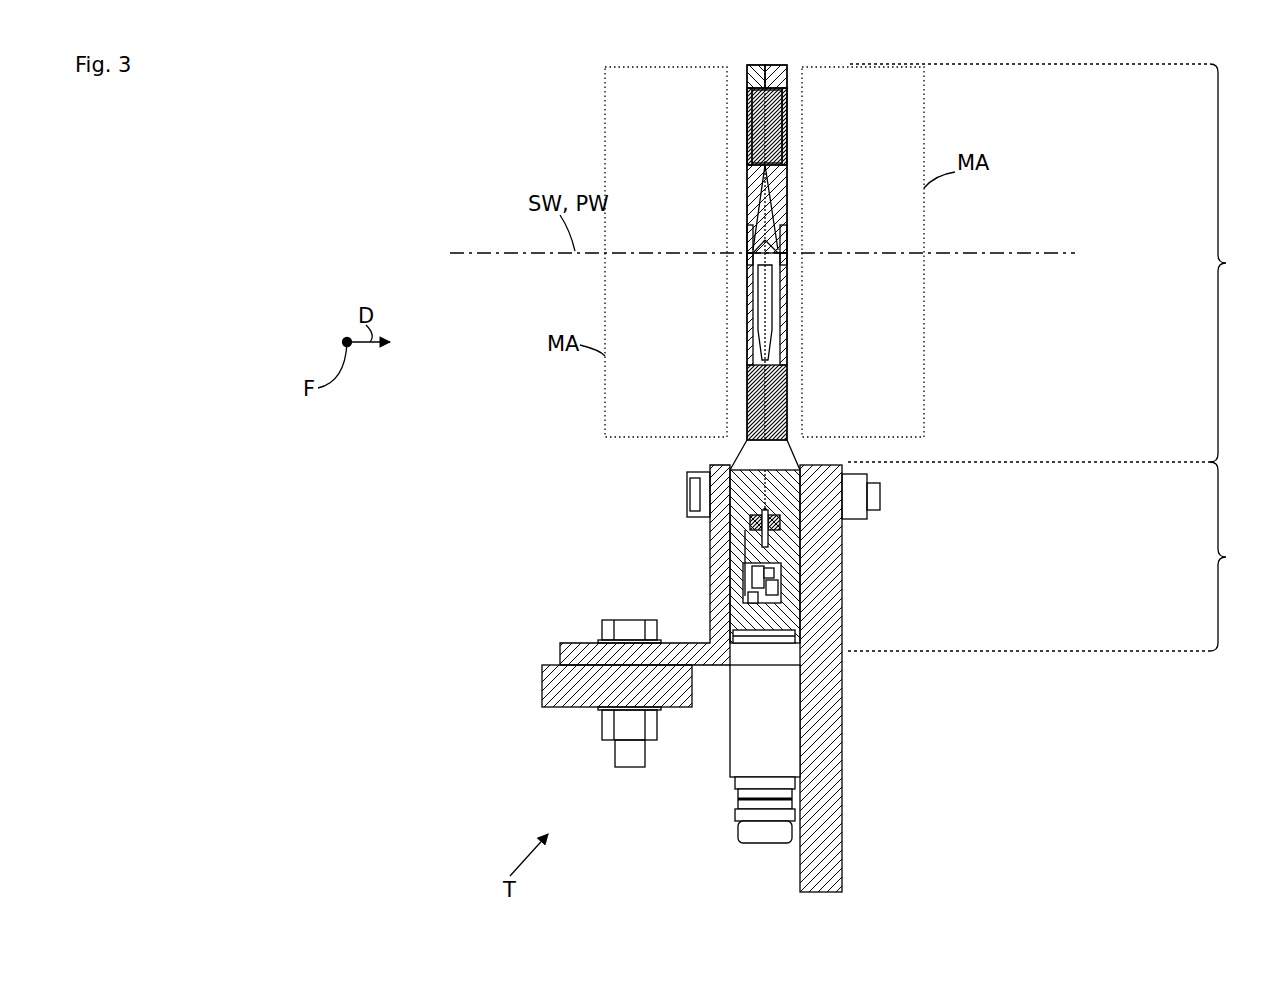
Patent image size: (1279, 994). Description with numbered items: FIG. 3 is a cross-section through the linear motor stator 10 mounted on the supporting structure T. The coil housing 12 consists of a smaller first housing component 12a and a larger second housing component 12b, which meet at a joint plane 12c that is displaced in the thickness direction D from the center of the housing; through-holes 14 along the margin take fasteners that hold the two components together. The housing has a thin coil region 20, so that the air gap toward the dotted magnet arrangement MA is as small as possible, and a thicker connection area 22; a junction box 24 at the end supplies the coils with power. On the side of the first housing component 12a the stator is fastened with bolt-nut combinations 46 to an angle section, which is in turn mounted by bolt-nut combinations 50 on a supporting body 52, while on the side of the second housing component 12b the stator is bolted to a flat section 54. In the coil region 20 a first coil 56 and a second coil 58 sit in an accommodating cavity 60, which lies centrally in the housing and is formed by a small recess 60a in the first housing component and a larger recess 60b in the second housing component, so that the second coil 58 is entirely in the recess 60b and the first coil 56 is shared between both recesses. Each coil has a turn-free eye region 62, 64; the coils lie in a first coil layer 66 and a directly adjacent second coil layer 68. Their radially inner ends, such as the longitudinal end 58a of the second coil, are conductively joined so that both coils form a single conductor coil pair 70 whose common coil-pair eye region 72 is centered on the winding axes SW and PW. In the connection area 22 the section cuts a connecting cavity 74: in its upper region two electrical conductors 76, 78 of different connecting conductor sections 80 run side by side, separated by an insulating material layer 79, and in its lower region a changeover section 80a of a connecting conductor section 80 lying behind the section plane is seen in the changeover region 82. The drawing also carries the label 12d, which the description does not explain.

The linear motor stator 10 is at (464, 130).
The coil housing 12 is at (627, 138).
The first housing component 12a is at (760, 72).
The second housing component 12b is at (780, 72).
The joint plane 12c is at (757, 205).
The second inner wall portion 12d is at (748, 218).
The through-holes 14 is at (785, 645).
The coil region 20 is at (1056, 263).
The connection area 22 is at (1054, 556).
The junction box 24 is at (765, 730).
The bolt-nut combinations 46 is at (690, 497).
The bolt-nut combinations 50 is at (628, 728).
The supporting body 52 is at (548, 690).
The flat section 54 is at (830, 820).
The first coil 56 is at (744, 143).
The second coil 58 is at (790, 143).
The radially inner longitudinal end 58a is at (773, 338).
The accommodating cavity 60 is at (744, 350).
The recess 60a is at (752, 262).
The recess 60b is at (773, 262).
The eye region 62 is at (744, 233).
The eye region 64 is at (790, 233).
The first coil layer 66 is at (757, 243).
The second coil layer 68 is at (775, 243).
The single conductor coil pair 70 is at (790, 122).
The coil-pair eye region 72 is at (790, 207).
The connecting cavity 74 is at (738, 536).
The electrical conductor 76 is at (744, 540).
The electrical conductor 78 is at (782, 520).
The electrically insulating material layer 79 is at (748, 518).
The connecting conductor section 80 is at (782, 573).
The changeover section 80a is at (780, 583).
The changeover region 82 is at (745, 597).